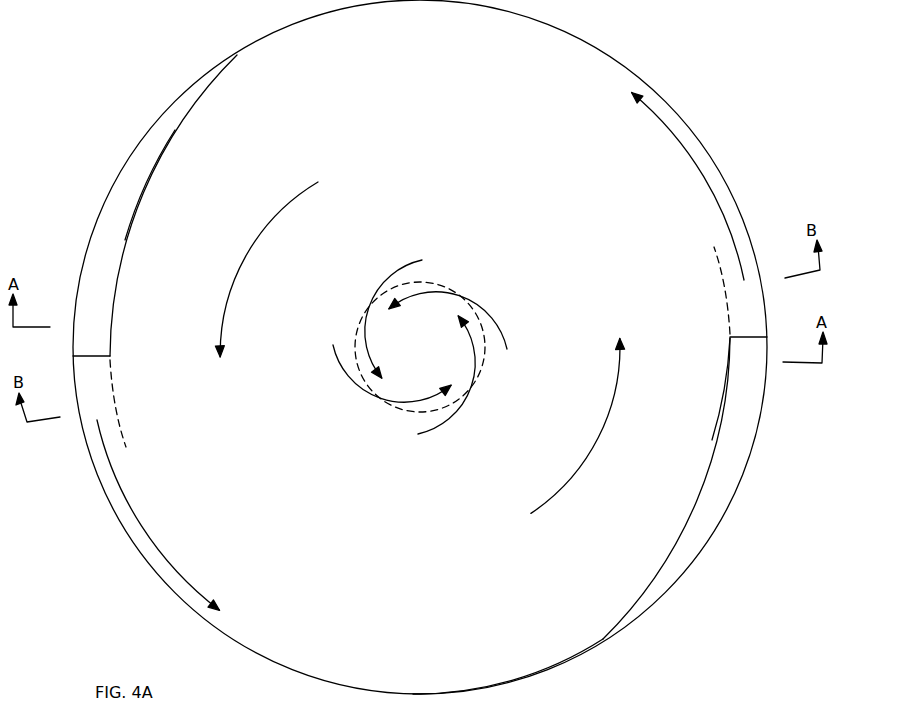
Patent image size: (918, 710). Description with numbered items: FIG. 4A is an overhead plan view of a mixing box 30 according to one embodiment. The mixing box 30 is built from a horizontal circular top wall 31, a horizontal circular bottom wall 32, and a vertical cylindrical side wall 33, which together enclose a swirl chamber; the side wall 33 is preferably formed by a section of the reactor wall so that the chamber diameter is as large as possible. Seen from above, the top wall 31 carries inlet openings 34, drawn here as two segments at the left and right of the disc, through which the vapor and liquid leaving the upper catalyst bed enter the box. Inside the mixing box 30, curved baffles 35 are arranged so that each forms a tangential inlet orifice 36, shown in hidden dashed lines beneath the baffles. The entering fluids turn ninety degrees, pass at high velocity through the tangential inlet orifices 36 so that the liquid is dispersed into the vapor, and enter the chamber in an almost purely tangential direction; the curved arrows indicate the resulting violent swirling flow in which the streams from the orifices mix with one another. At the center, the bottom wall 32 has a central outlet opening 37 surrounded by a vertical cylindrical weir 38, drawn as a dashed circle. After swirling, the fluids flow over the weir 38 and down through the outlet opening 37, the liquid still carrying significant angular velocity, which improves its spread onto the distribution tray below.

The mixing box 30 is at (707, 120).
The horizontal circular top wall 31 is at (348, 529).
The horizontal circular bottom wall 32 is at (112, 260).
The vertical cylindrical side wall 33 is at (535, 673).
The inlet opening 34 is at (95, 290).
The curved baffle 35 is at (138, 215).
The tangential inlet orifice 36 is at (97, 402).
The central outlet opening 37 is at (411, 323).
The vertical cylindrical weir 38 is at (488, 358).